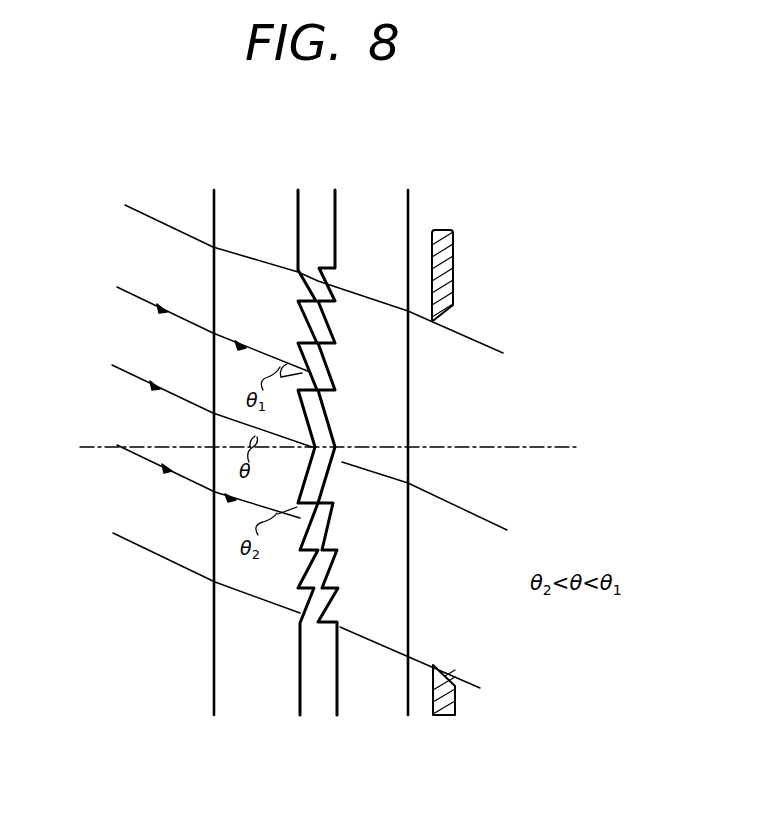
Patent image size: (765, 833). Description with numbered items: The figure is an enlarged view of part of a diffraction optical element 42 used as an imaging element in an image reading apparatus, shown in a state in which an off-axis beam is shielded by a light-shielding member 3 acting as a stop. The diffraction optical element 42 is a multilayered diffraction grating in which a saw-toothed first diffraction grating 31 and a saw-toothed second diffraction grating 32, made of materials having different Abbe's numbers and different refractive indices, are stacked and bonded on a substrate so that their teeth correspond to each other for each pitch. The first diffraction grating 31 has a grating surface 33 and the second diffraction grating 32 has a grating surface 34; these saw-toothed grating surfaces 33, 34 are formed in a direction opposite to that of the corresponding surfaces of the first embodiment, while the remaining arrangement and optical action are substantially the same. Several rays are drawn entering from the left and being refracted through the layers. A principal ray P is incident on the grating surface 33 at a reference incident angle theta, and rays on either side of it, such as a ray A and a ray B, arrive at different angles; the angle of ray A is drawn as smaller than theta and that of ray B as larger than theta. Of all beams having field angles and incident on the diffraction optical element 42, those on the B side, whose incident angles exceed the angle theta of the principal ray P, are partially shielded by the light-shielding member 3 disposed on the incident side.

The diffraction optical element 42 is at (192, 125).
The first diffraction grating 31 is at (249, 193).
The second diffraction grating 32 is at (366, 193).
The grating surface 33 is at (300, 418).
The grating surface 34 is at (322, 372).
The light shielding member 3 is at (453, 263).
The B side B is at (203, 325).
The principal ray P is at (299, 441).
The light ray A is at (200, 469).